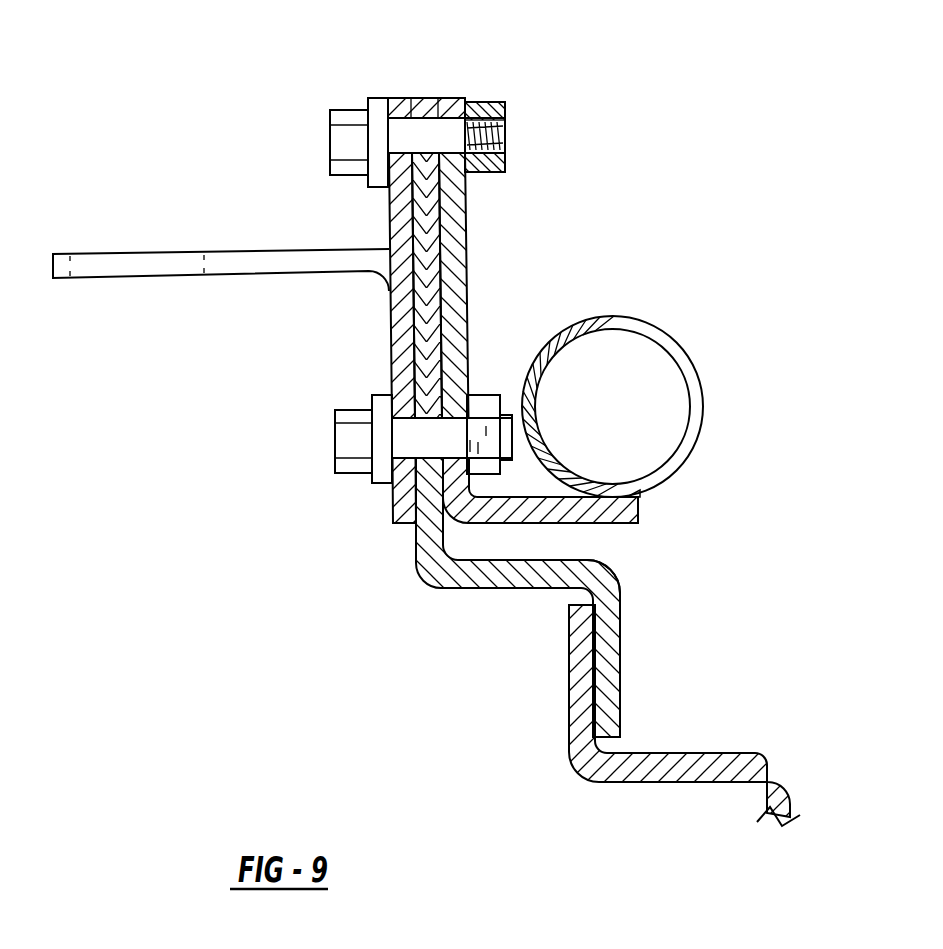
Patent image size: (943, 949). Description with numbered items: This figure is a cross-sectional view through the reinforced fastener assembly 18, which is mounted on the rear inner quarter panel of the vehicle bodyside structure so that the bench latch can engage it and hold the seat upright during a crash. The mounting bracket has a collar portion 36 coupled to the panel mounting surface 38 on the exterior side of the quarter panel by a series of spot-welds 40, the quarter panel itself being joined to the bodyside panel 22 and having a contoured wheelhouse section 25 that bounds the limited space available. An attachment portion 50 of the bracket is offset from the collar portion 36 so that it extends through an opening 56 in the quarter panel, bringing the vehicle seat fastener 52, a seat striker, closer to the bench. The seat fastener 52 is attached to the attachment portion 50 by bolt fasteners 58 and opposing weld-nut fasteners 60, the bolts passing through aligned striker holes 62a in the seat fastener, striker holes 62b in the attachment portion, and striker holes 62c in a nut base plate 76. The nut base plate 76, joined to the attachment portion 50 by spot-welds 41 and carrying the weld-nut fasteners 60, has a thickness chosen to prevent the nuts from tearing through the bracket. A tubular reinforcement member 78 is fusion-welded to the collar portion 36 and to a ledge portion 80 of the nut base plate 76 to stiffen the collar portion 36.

The reinforced fastener assembly 18 is at (530, 203).
The bodyside panel 22 is at (781, 753).
The contoured wheelhouse section 25 is at (673, 753).
The collar portion 36 is at (621, 598).
The panel mounting surface 38 is at (572, 690).
The spot-welds 40 is at (620, 662).
The spot-welds 41 is at (468, 288).
The attachment portion 50 is at (415, 538).
The vehicle seat fastener 52 is at (247, 250).
The opening 56 is at (572, 605).
The bolt fasteners 58 is at (330, 135).
The weld-nut fasteners 60 is at (493, 103).
The striker holes 62a is at (388, 147).
The striker holes 62b is at (416, 120).
The striker holes 62c is at (456, 120).
The nut base plate 76 is at (538, 490).
The tubular reinforcement member 78 is at (703, 402).
The ledge portion 80 is at (613, 540).